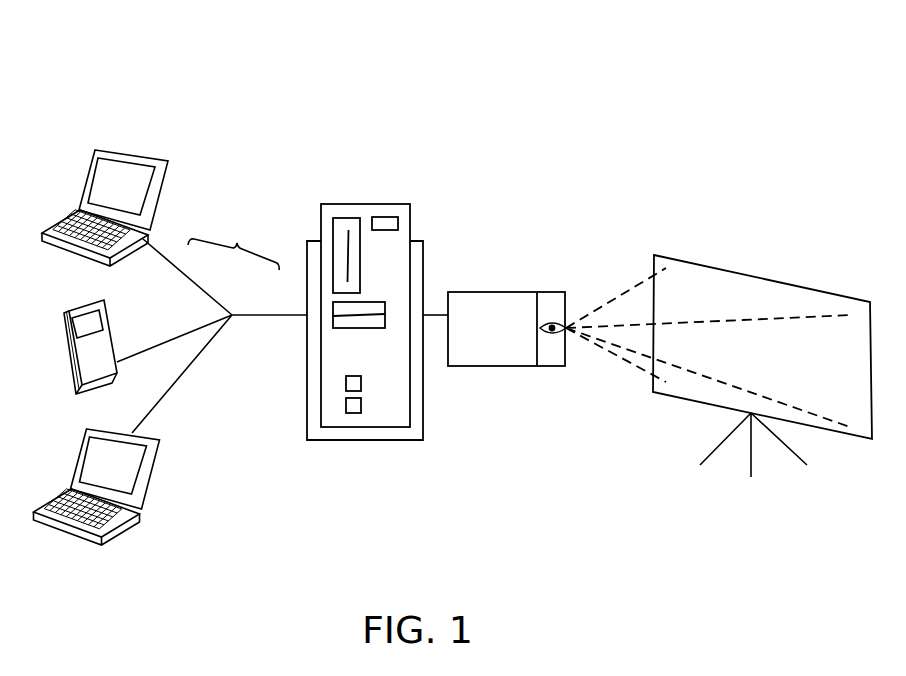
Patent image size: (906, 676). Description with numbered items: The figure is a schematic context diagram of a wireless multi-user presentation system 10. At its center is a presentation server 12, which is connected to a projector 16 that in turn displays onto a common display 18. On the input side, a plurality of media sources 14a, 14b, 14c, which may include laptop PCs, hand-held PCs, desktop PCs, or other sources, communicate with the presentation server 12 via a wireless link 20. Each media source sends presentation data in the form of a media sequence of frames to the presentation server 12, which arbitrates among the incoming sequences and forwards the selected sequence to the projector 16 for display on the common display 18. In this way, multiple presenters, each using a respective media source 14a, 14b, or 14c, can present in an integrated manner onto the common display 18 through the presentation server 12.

The presentation system 10 is at (491, 49).
The presentation server 12 is at (340, 443).
The media source 14a is at (168, 162).
The media source 14b is at (105, 318).
The media source 14c is at (152, 478).
The projector 16 is at (500, 368).
The common display 18 is at (667, 397).
The wireless link 20 is at (212, 327).